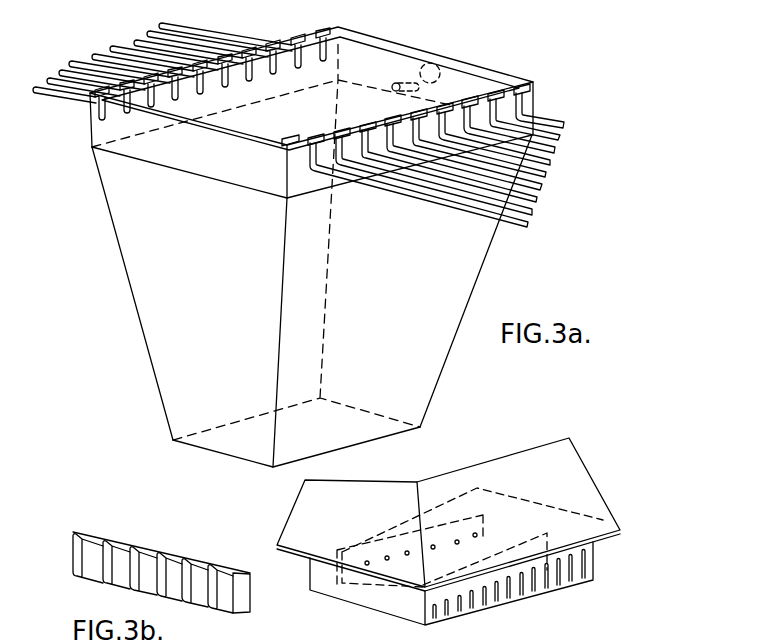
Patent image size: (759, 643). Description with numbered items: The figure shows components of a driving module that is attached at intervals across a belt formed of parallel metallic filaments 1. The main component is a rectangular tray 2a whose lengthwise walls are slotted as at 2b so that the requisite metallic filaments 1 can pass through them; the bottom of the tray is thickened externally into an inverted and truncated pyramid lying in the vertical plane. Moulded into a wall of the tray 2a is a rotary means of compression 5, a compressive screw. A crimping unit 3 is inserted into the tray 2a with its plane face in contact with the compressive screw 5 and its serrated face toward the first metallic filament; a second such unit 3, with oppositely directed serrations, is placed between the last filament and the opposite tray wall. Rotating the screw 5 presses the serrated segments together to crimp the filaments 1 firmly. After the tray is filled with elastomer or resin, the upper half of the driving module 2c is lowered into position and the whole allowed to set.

In FIG. 3A, the metallic filaments 1 is at (449, 204).
In FIG. 3A, the rectangular tray 2a is at (432, 365).
In FIG. 3A, the slots 2b is at (147, 86).
In FIG. 3B, the upper half of the driving module 2c is at (567, 477).
In FIG. 3B, the crimping unit 3 is at (178, 561).
In FIG. 3A, the rotary means of compression 5 is at (441, 66).